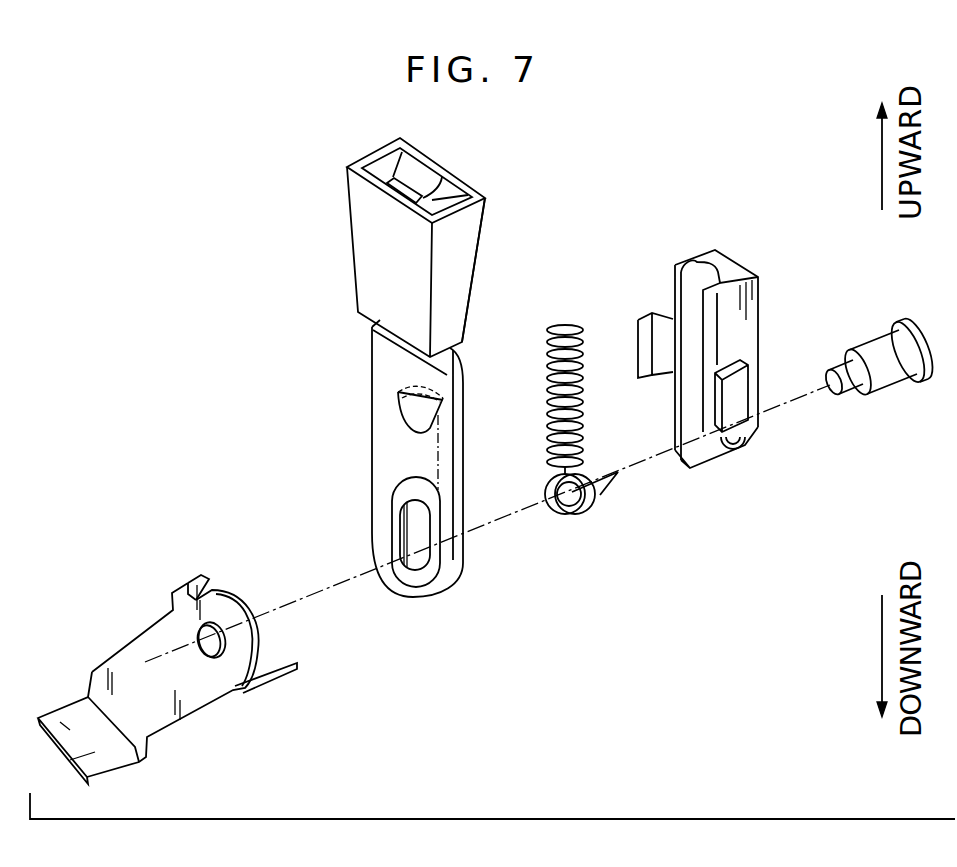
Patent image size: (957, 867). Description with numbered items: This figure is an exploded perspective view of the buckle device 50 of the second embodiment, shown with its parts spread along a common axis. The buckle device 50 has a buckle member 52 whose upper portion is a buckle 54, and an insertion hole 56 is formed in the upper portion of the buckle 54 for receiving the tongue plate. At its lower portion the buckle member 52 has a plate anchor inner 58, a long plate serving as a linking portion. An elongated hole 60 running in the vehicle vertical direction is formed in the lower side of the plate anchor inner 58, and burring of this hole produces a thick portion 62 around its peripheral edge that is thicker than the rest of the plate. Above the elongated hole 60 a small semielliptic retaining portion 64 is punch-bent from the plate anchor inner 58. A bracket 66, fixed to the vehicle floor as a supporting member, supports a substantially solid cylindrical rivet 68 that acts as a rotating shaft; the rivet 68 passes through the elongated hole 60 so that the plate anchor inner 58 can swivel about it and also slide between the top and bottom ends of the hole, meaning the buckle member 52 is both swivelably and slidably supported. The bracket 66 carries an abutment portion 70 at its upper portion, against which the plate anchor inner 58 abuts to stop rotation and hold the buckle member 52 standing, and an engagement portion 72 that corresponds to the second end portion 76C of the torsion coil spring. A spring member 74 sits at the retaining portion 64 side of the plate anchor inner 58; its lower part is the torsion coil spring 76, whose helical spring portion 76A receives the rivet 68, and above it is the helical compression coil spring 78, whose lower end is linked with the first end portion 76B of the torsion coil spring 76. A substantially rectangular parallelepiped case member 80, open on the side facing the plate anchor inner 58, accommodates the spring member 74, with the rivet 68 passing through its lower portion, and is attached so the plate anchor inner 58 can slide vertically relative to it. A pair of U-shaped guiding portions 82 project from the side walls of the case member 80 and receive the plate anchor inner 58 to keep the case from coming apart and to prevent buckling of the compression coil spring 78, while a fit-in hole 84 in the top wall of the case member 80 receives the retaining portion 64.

The buckle device 50 is at (223, 289).
The buckle member 52 is at (455, 236).
The buckle 54 is at (486, 257).
The insertion hole 56 is at (430, 181).
The plate anchor inner 58 is at (401, 458).
The elongated hole 60 is at (415, 530).
The thick portion 62 is at (395, 490).
The retaining portion 64 is at (443, 398).
The bracket 66 is at (212, 641).
The rivet 68 is at (928, 385).
The abutment portion 70 is at (200, 575).
The engagement portion 72 is at (298, 668).
The spring member 74 is at (597, 406).
The torsion coil spring 76 is at (597, 511).
The spring portion 76A is at (553, 515).
The first end portion 76B is at (547, 470).
The second end portion 76C is at (612, 490).
The compression coil spring 78 is at (583, 350).
The case member 80 is at (710, 317).
The guiding portions 82 is at (655, 318).
The fit-in hole 84 is at (700, 262).